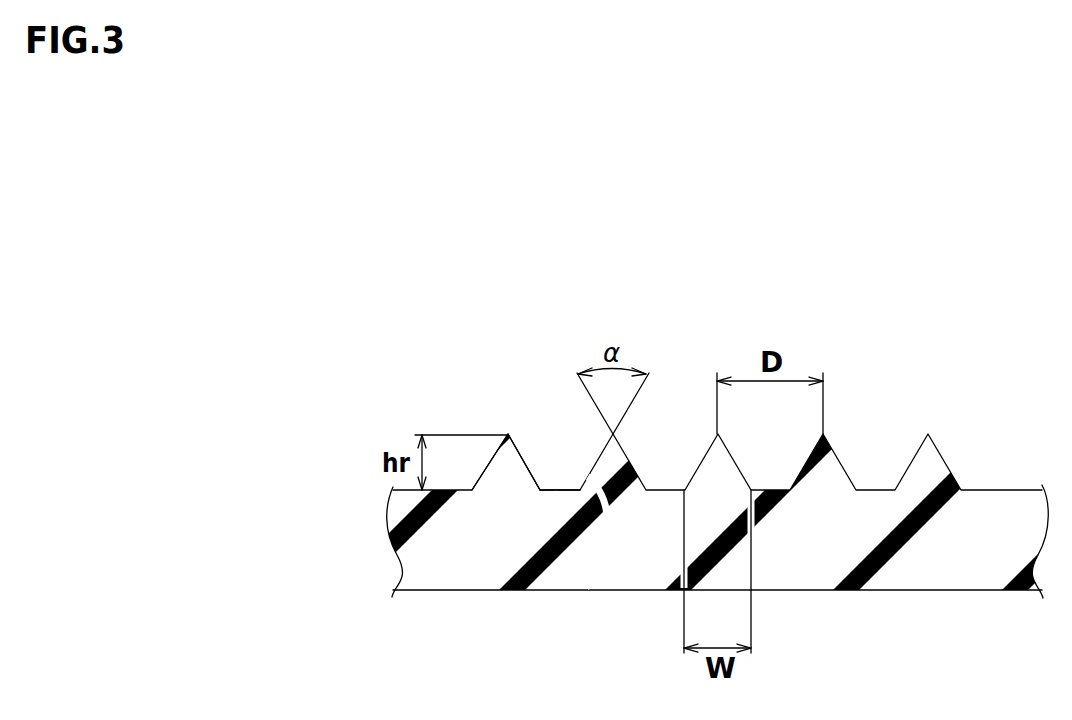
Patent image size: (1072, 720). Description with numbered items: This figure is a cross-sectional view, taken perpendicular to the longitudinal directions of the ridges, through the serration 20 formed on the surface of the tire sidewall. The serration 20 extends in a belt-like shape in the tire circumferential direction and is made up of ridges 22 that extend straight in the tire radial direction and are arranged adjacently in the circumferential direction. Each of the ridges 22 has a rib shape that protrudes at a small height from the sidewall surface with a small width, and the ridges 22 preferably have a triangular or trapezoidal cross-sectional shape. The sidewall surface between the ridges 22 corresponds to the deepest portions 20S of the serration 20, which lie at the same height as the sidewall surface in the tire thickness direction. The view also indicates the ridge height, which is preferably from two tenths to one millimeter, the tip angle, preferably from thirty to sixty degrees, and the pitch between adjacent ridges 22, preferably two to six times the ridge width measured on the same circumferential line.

The serration 20 is at (877, 375).
The ridges 22 is at (507, 477).
The deepest portions 20S is at (558, 490).